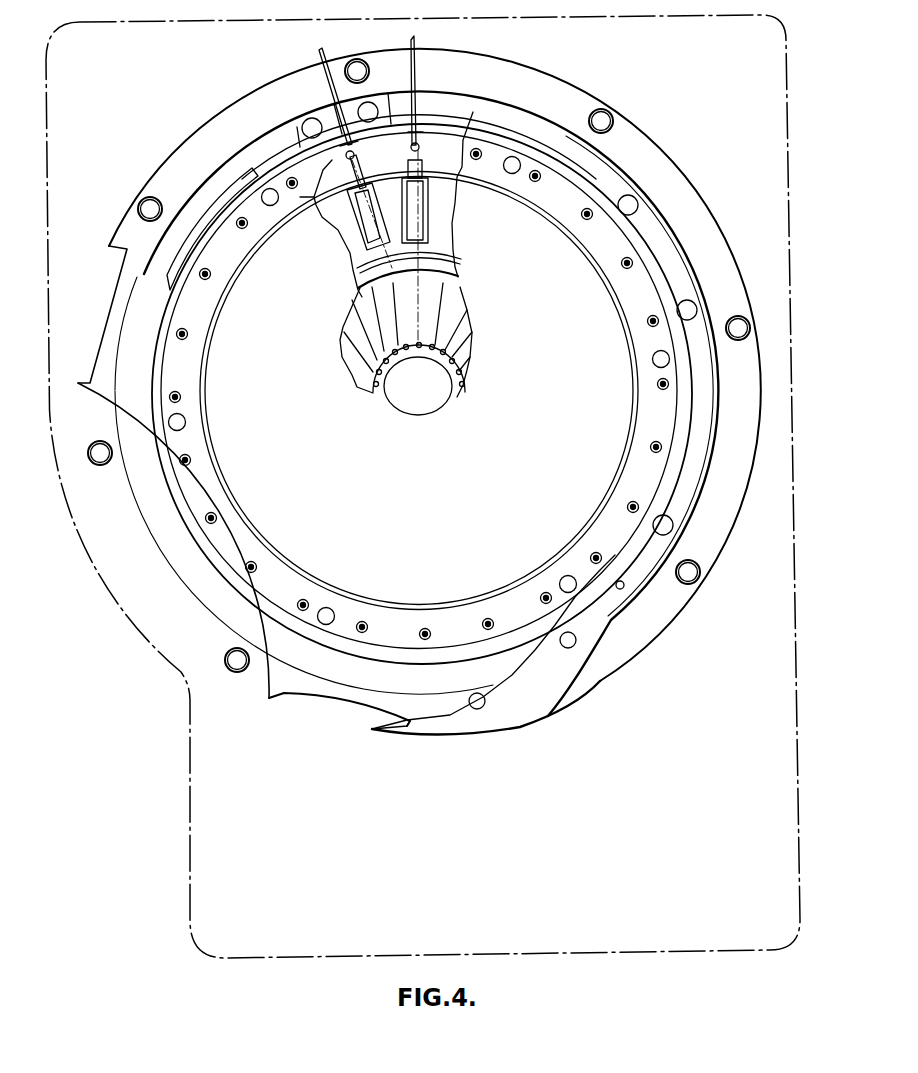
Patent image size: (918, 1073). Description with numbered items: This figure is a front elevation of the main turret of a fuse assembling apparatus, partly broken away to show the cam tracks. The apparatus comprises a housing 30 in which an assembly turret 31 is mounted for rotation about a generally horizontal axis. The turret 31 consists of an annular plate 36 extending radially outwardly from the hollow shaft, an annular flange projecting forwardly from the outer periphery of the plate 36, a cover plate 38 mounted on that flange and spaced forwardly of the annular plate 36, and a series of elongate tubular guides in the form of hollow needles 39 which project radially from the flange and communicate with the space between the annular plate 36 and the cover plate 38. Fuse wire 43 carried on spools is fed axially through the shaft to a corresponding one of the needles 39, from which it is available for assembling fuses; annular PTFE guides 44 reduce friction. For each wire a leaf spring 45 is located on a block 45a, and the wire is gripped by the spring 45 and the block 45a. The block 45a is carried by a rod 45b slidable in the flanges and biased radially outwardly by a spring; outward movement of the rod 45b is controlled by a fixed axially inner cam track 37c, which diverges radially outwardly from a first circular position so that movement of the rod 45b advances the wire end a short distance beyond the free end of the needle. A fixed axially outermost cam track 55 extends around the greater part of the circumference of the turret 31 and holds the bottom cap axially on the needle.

The housing 30 is at (190, 800).
The assembly turret 31 is at (573, 291).
The annular plate 36 is at (338, 208).
The fixed axially inner cam track 37c is at (316, 203).
The cover plate 38 is at (546, 462).
The hollow needles 39 is at (417, 67).
The fuse wire 43 is at (420, 288).
The annular PTFE guides 44 is at (430, 330).
The leaf spring 45 is at (405, 204).
The block 45a is at (425, 225).
The rod 45b is at (435, 165).
The fixed axially outermost cam track 55 is at (202, 228).